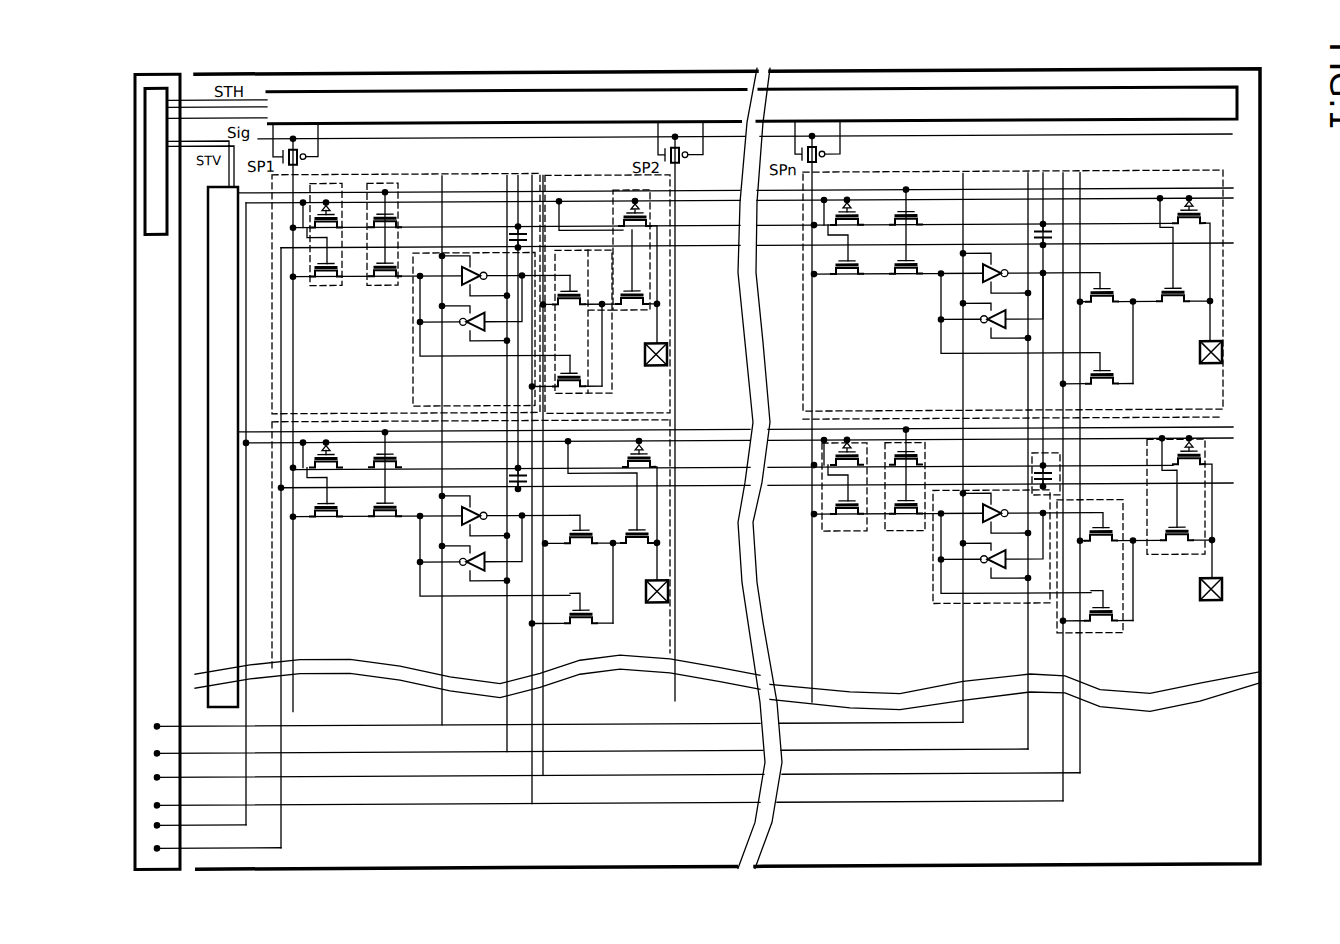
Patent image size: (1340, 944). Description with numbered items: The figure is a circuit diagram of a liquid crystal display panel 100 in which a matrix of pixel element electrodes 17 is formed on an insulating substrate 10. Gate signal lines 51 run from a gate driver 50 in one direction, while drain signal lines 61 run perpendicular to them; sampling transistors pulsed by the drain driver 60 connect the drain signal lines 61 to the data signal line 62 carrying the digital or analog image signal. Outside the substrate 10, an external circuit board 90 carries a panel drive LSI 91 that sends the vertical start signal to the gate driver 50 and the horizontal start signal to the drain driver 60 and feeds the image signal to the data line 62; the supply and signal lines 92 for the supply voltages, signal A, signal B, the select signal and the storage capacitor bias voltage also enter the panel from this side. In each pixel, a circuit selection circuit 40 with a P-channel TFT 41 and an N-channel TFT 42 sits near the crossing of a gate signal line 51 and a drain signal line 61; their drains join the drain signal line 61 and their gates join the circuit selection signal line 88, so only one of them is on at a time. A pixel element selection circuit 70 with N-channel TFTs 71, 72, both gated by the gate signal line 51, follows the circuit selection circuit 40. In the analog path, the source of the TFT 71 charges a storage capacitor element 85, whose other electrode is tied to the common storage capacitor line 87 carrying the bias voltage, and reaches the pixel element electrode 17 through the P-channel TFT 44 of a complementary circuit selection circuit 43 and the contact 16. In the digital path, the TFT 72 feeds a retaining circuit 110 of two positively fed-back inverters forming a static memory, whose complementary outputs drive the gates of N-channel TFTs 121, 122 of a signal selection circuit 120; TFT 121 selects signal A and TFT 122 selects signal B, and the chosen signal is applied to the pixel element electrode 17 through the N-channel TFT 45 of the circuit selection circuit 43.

The liquid crystal display panel 100 is at (719, 62).
The insulating substrate 10 is at (887, 69).
The drain driver 60 is at (621, 86).
The data signal line 62 is at (1213, 135).
The gate driver 50 is at (216, 412).
The external circuit board 90 is at (135, 305).
The panel drive LSI 91 is at (145, 154).
The supply and signal lines 92 is at (152, 718).
The gate signal line 51 is at (1233, 188).
The circuit selection signal line 88 is at (1233, 198).
The common storage capacitor line 87 is at (1233, 243).
The drain signal line 61 is at (293, 575).
The circuit selection circuit 40 is at (340, 282).
The P-channel circuit selection TFT 41 is at (336, 209).
The N-channel circuit selection TFT 42 is at (328, 284).
The pixel element selection circuit 70 is at (401, 283).
The pixel element selection TFT 71 is at (400, 212).
The N-channel TFT 72 is at (388, 284).
The retaining circuit 110 is at (412, 396).
The storage capacitor element 85 is at (517, 220).
The circuit selection circuit 43 is at (627, 183).
The P-channel circuit selection TFT 44 is at (615, 211).
The N-channel circuit selection TFT 45 is at (647, 292).
The signal selection circuit 120 is at (583, 393).
The N-channel TFT 121 is at (578, 288).
The N-channel TFT 122 is at (560, 367).
The contact 16 is at (670, 353).
The pixel element electrode 17 is at (672, 398).